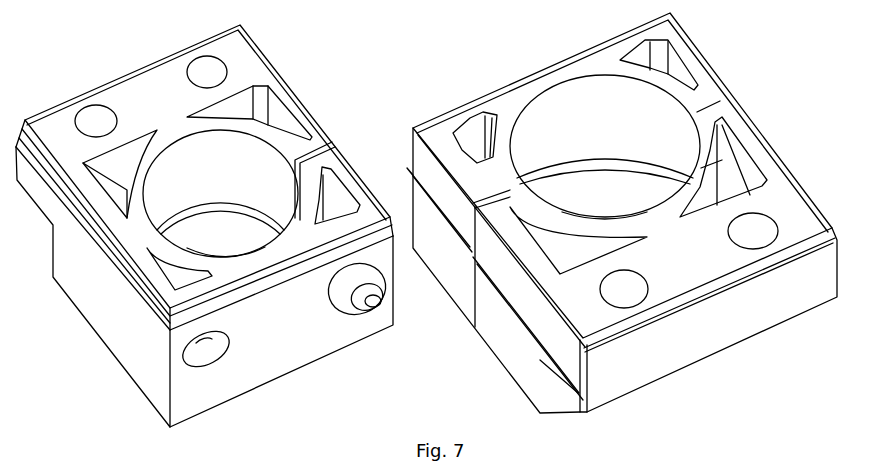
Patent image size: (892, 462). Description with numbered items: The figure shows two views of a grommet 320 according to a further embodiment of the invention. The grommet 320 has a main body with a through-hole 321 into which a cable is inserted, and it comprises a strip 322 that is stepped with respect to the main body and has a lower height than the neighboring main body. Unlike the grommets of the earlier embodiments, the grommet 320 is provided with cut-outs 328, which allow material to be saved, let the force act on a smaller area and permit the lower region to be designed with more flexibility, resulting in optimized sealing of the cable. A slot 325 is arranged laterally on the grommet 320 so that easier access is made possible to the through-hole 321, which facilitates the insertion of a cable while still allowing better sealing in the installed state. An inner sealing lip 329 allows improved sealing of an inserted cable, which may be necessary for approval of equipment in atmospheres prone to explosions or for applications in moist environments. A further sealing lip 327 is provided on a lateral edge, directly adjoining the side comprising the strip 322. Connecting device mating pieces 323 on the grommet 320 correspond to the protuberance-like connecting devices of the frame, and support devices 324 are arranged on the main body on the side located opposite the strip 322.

The grommet 320 is at (790, 134).
The hole 321 is at (587, 118).
The strip 322 is at (745, 323).
The connecting device mating pieces 323 is at (200, 72).
The support device 324 is at (223, 347).
The slot 325 is at (492, 316).
The sealing lip 327 is at (147, 327).
The cut-outs 328 is at (565, 248).
The sealing lip 329 is at (658, 165).